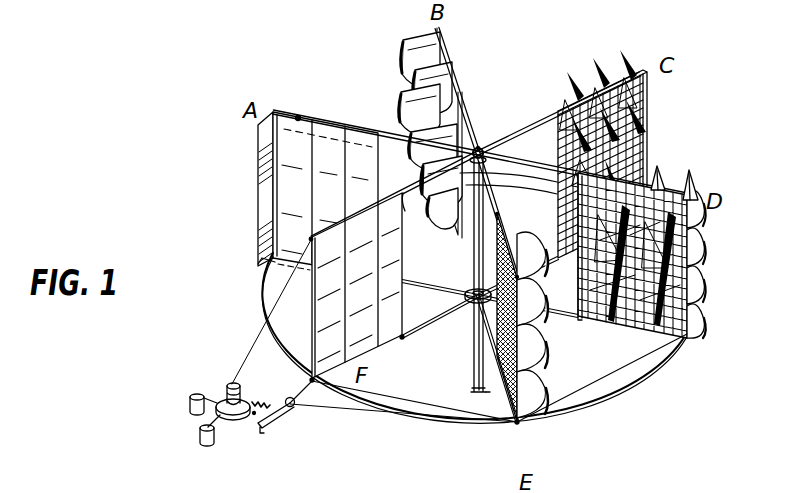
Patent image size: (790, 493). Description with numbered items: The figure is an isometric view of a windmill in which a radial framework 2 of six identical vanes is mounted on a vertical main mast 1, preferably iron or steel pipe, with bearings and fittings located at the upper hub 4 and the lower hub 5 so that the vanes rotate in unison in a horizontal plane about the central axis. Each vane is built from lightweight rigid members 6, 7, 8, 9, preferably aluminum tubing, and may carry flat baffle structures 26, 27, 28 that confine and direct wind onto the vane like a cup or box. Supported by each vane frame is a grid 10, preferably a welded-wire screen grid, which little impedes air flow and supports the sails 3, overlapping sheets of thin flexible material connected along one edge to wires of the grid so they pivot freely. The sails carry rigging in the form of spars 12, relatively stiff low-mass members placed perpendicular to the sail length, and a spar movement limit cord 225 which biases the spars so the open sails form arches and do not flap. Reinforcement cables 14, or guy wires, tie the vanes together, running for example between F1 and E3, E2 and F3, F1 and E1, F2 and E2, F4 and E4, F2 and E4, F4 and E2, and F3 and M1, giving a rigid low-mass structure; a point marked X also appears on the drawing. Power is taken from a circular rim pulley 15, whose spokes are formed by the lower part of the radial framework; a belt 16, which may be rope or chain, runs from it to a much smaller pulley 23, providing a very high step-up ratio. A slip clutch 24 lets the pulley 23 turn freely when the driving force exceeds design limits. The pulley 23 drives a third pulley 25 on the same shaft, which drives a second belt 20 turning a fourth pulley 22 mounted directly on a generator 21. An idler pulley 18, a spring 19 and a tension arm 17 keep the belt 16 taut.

The main mast 1 is at (471, 340).
The radial framework 2 is at (458, 62).
The sails 3 is at (396, 275).
The hub 4 is at (484, 147).
The hub 5 is at (470, 290).
The rigid member 6 is at (584, 318).
The rigid member 7 is at (518, 160).
The rigid member 8 is at (580, 278).
The rigid member 9 is at (694, 312).
The grid 10 is at (637, 335).
The spars 12 is at (536, 358).
The reinforcement cables 14 is at (421, 397).
The rim pulley 15 is at (267, 333).
The belt 16 is at (353, 412).
The tension arm 17 is at (278, 422).
The idler pulley 18 is at (295, 407).
The spring 19 is at (255, 415).
The second belt 20 is at (229, 420).
The generator 21 is at (200, 439).
The fourth pulley 22 is at (198, 395).
The small pulley 23 is at (238, 386).
The slip clutch 24 is at (225, 401).
The third pulley 25 is at (240, 418).
The baffle structure 26 is at (303, 126).
The baffle structure 27 is at (266, 265).
The baffle structure 28 is at (262, 192).
The cord 225 is at (664, 172).
The cable attachment point M1 is at (479, 143).
The reference point X is at (298, 114).
The cable attachment point E1 is at (518, 274).
The cable attachment point E2 is at (498, 216).
The cable attachment point E3 is at (519, 425).
The cable attachment point E4 is at (496, 398).
The cable attachment point F1 is at (310, 240).
The cable attachment point F2 is at (413, 211).
The cable attachment point F3 is at (404, 339).
The cable attachment point F4 is at (298, 388).